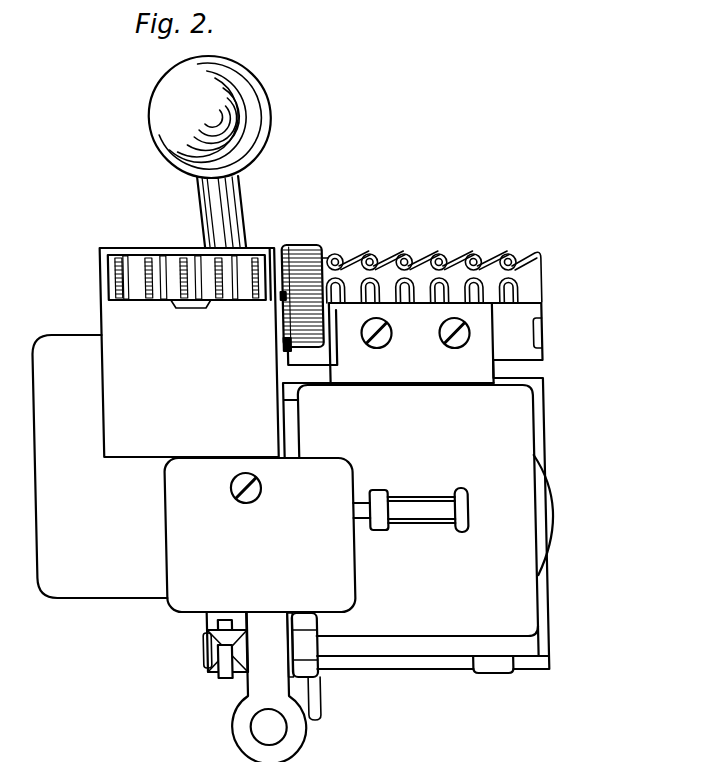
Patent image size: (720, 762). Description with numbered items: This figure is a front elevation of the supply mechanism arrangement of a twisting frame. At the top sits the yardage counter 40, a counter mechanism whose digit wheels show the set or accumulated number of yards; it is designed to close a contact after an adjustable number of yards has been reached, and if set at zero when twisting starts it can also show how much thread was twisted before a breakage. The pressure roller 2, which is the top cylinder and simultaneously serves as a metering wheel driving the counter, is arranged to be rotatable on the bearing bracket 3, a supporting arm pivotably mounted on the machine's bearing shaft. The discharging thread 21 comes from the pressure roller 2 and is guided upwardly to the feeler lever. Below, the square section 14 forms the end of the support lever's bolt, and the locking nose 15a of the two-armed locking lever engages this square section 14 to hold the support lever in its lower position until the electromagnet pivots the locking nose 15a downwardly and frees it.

The pressure roller 2 is at (521, 406).
The bearing bracket 3 is at (178, 596).
The square section 14 is at (207, 648).
The locking nose 15a is at (214, 670).
The discharging thread 21 is at (406, 490).
The yardage counter 40 is at (189, 352).